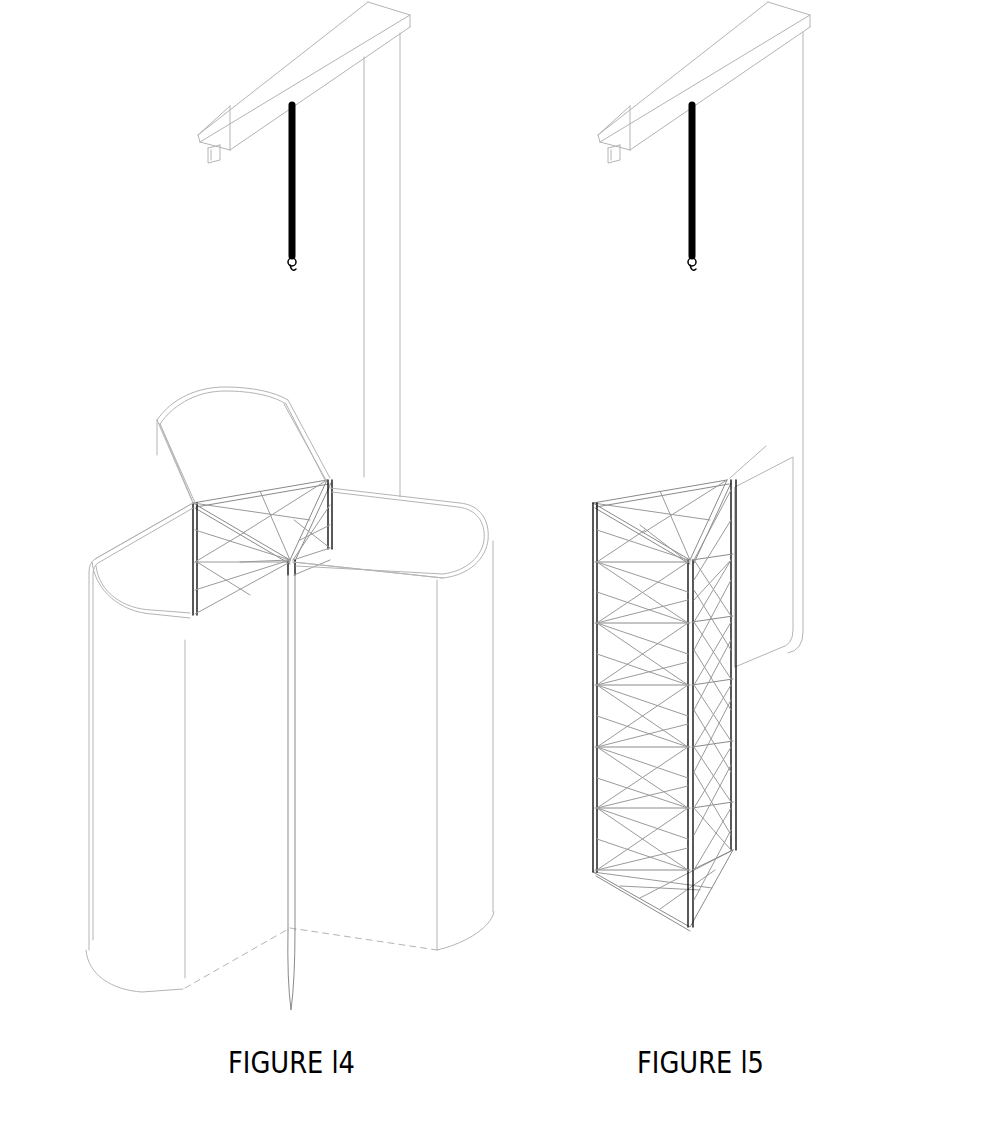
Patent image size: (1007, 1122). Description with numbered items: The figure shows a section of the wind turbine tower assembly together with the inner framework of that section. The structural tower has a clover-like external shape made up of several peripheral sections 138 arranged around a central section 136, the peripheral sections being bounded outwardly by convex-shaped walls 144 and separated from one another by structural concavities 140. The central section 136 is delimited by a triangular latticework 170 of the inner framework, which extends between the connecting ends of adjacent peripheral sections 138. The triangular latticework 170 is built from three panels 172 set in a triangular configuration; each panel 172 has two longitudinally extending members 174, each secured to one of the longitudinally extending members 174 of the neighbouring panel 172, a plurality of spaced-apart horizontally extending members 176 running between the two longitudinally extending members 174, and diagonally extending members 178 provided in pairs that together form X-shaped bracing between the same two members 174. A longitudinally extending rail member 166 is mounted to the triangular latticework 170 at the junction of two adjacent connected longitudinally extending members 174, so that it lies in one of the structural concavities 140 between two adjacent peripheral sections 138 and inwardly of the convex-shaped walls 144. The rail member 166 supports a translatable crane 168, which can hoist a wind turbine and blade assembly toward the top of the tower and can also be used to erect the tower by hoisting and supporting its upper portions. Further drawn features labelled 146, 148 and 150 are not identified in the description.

In FIG. 14, the central section 136 is at (297, 517).
In FIG. 15, the central section 136 is at (676, 512).
In FIG. 14, the peripheral sections 138 is at (237, 399).
In FIG. 14, the structural concavities 140 is at (145, 492).
In FIG. 14, the convex-shaped walls 144 is at (207, 423).
In FIG. 14, the shroud panel 146 is at (465, 518).
In FIG. 15, the shroud panel 146 is at (761, 556).
In FIG. 14, the panel surface 148 is at (162, 555).
In FIG. 14, the panel edge 150 is at (328, 478).
In FIG. 15, the longitudinally extending rail member 166 is at (735, 749).
In FIG. 14, the translatable crane 168 is at (403, 305).
In FIG. 15, the translatable crane 168 is at (768, 337).
In FIG. 14, the triangular latticework 170 is at (253, 490).
In FIG. 15, the triangular latticework 170 is at (737, 887).
In FIG. 15, the panels 172 is at (630, 493).
In FIG. 15, the longitudinally extending members 174 is at (593, 842).
In FIG. 15, the horizontally extending members 176 is at (652, 848).
In FIG. 15, the diagonally extending members 178 is at (653, 645).